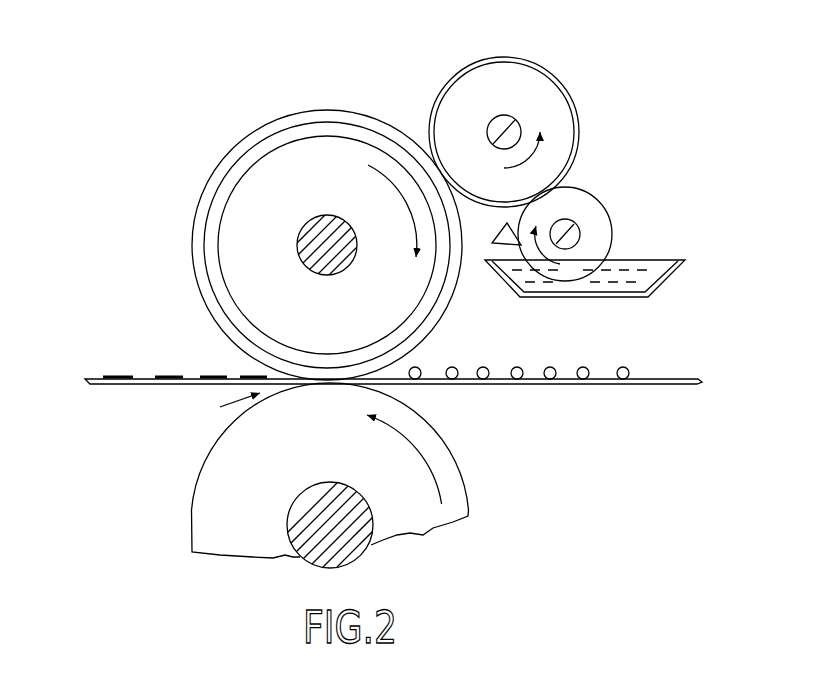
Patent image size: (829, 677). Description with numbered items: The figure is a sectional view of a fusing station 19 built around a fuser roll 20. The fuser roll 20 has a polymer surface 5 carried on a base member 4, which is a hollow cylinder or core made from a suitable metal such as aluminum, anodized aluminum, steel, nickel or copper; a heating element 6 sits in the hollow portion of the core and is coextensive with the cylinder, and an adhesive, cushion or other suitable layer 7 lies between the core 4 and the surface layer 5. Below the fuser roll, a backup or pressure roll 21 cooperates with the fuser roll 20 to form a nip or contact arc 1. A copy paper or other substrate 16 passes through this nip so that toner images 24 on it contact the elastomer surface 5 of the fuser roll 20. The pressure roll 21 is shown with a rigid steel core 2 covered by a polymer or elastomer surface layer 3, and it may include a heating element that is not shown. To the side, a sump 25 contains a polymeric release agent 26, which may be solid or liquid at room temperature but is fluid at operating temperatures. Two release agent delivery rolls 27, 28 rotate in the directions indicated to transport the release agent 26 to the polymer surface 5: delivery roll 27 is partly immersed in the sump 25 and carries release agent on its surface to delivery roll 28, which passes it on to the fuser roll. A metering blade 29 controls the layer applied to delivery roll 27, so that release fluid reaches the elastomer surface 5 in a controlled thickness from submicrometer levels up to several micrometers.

The nip or contact arc 1 is at (231, 409).
The rigid steel core 2 is at (360, 535).
The polymer or elastomer surface layer 3 is at (458, 495).
The base member 4 is at (347, 135).
The polymer surface 5 is at (215, 168).
The heating element 6 is at (296, 240).
The adhesive, cushion, or other suitable layer 7 is at (283, 127).
The substrate 16 is at (562, 387).
The fusing station 19 is at (207, 82).
The fuser roll 20 is at (187, 313).
The backup or pressure roll 21 is at (170, 473).
The toner images 24 is at (584, 367).
The sump 25 is at (662, 286).
The polymeric release agent 26 is at (657, 270).
The release agent delivery roll 27 is at (611, 222).
The release agent delivery roll 28 is at (572, 102).
The metering blade 29 is at (497, 236).